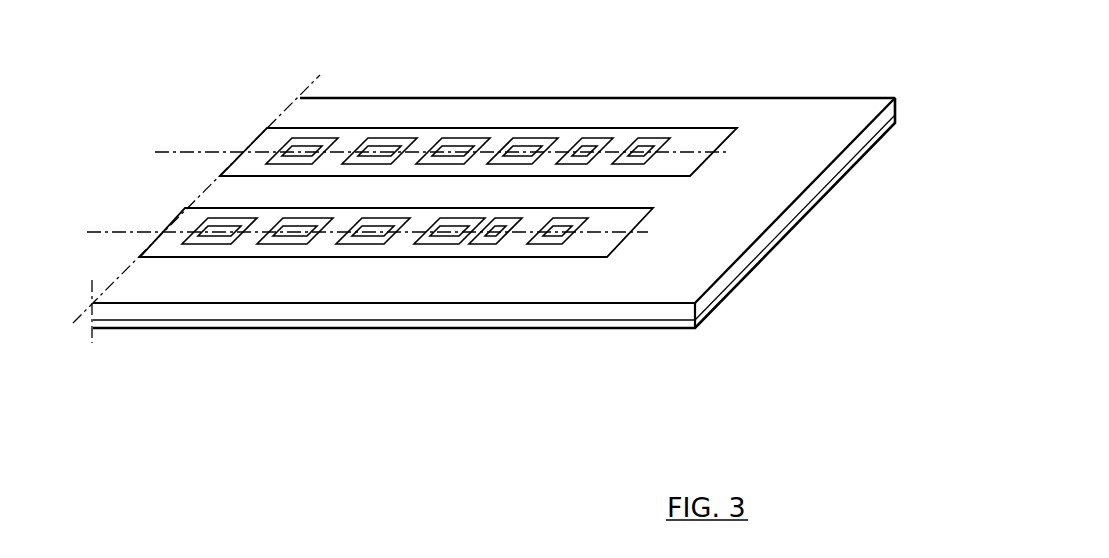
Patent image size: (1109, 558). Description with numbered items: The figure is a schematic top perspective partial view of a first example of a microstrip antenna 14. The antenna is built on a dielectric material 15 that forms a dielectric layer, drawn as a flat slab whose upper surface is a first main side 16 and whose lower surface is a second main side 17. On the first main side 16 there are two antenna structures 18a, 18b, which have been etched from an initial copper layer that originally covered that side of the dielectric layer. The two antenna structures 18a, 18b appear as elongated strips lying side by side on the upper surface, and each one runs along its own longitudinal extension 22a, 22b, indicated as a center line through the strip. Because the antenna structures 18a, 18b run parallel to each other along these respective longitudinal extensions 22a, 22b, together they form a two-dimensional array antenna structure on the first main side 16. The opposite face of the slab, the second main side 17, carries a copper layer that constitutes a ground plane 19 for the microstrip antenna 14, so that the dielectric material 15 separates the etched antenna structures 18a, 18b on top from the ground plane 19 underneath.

The microstrip antenna 14 is at (753, 63).
The dielectric material 15 is at (743, 265).
The first main side 16 is at (773, 115).
The second main side 17 is at (667, 333).
The antenna structure 18a is at (740, 125).
The antenna structure 18b is at (660, 205).
The ground plane 19 is at (575, 322).
The longitudinal extension 22a is at (215, 150).
The longitudinal extension 22b is at (155, 231).